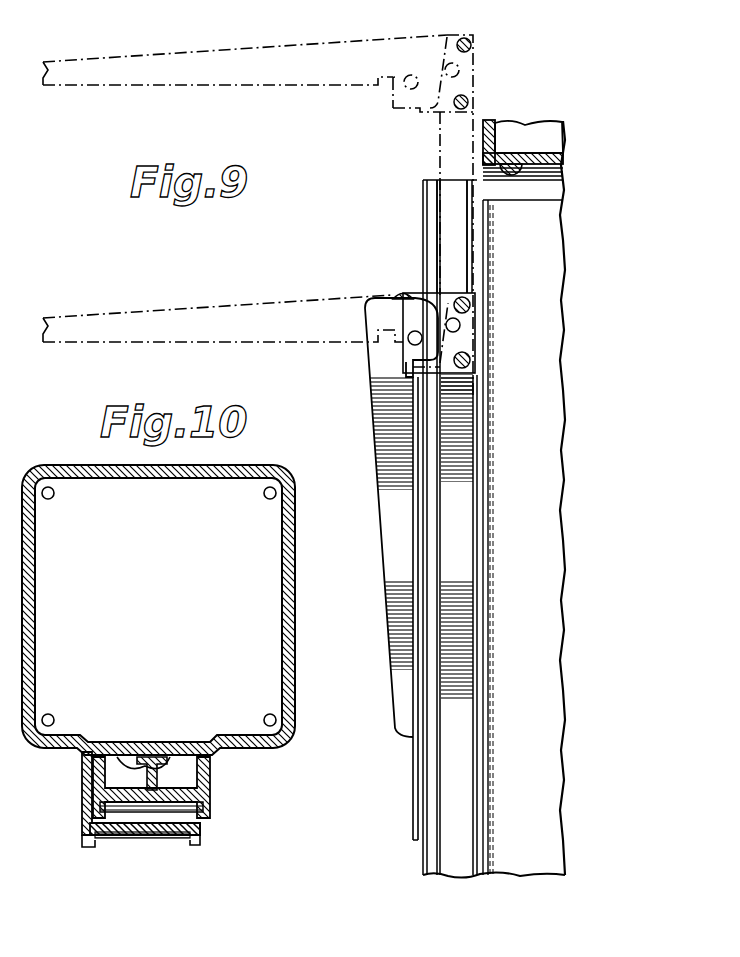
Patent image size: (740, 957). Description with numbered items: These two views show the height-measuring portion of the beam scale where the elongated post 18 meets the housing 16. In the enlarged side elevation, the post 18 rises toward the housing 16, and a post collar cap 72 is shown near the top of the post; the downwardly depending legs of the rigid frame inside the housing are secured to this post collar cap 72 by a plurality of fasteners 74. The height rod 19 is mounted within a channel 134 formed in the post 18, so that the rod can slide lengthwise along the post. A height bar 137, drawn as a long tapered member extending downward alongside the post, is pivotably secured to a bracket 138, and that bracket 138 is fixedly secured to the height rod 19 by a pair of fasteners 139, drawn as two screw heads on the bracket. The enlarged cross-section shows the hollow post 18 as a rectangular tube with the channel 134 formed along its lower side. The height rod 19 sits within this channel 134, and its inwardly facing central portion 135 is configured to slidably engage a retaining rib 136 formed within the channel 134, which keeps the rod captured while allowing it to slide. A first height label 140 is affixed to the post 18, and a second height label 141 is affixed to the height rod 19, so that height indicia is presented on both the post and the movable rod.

In FIG. 9, the housing 16 is at (488, 124).
In FIG. 9, the elongated post 18 is at (514, 873).
In FIG. 10, the elongated post 18 is at (262, 469).
In FIG. 9, the height rod 19 is at (450, 879).
In FIG. 10, the height rod 19 is at (212, 797).
In FIG. 9, the post collar cap 72 is at (542, 182).
In FIG. 9, the fasteners 74 is at (504, 182).
In FIG. 9, the channel 134 is at (450, 240).
In FIG. 10, the channel 134 is at (94, 782).
In FIG. 10, the inwardly facing central portion 135 is at (173, 755).
In FIG. 9, the retaining rib 136 is at (468, 213).
In FIG. 10, the retaining rib 136 is at (130, 757).
In FIG. 9, the height bar 137 is at (388, 526).
In FIG. 9, the bracket 138 is at (417, 297).
In FIG. 9, the fasteners 139 is at (470, 307).
In FIG. 10, the first height label 140 is at (133, 838).
In FIG. 10, the second height label 141 is at (173, 813).